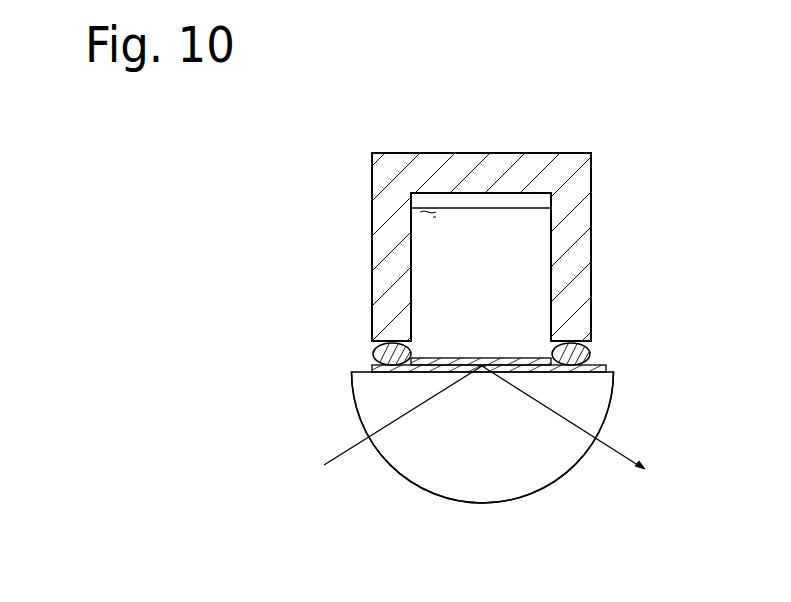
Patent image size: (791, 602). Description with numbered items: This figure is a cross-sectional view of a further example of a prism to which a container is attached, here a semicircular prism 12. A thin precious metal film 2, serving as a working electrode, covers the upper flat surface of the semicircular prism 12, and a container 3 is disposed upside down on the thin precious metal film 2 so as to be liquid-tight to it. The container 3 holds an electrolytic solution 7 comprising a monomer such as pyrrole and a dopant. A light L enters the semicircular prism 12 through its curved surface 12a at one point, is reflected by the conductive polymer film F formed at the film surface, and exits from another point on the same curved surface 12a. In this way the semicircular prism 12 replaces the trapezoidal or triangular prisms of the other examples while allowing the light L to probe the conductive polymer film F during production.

The container 3 is at (584, 187).
The electrolytic solution 7 is at (478, 230).
The thin precious metal film 2 is at (598, 368).
The semicircular prism 12 is at (599, 404).
The curved surface 12a is at (410, 483).
The light L is at (338, 452).
The conductive polymer film F is at (465, 356).